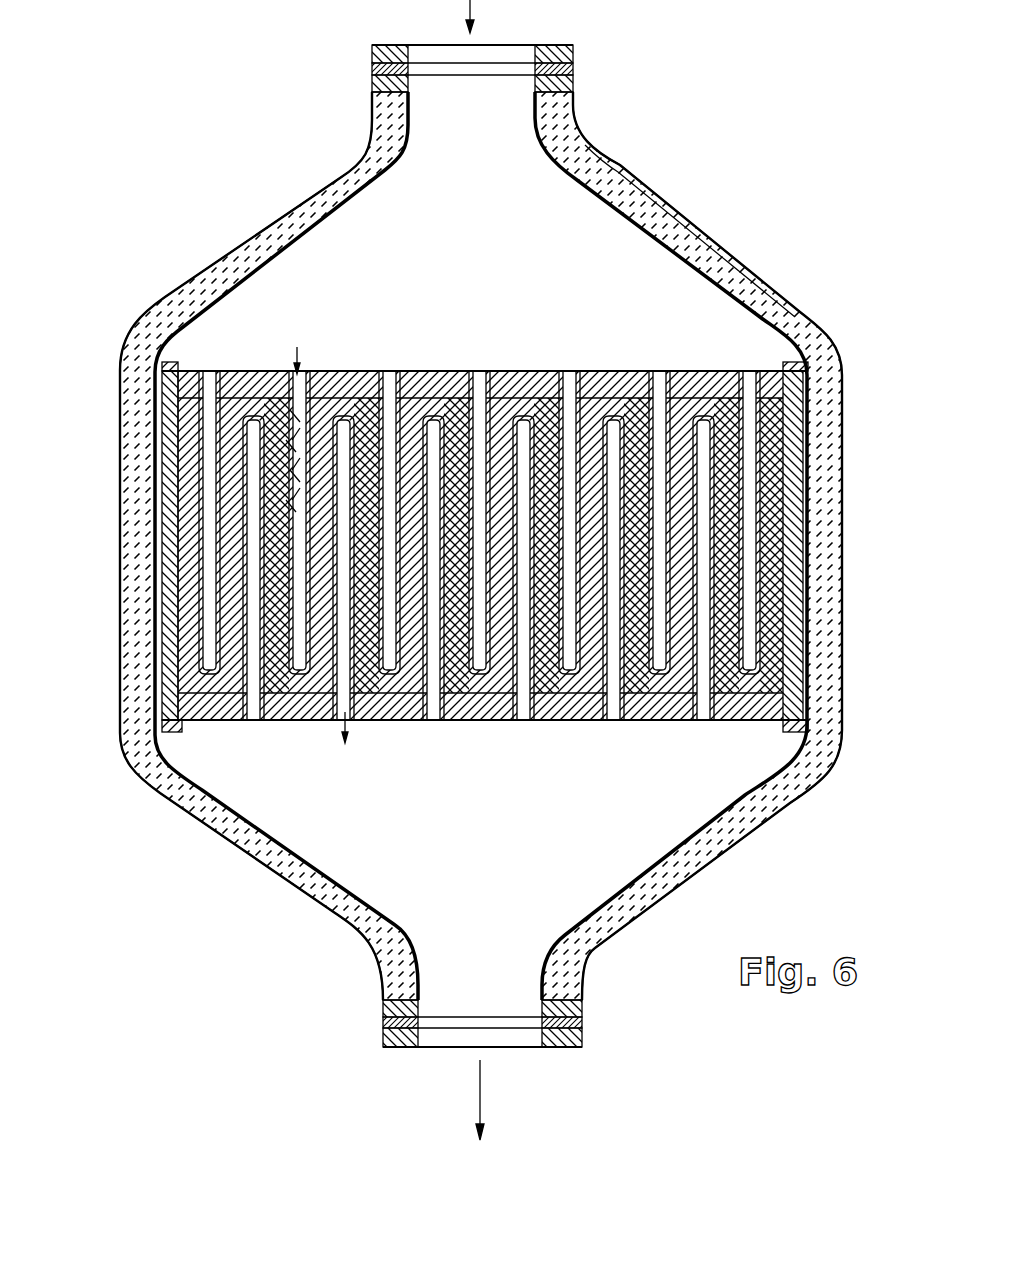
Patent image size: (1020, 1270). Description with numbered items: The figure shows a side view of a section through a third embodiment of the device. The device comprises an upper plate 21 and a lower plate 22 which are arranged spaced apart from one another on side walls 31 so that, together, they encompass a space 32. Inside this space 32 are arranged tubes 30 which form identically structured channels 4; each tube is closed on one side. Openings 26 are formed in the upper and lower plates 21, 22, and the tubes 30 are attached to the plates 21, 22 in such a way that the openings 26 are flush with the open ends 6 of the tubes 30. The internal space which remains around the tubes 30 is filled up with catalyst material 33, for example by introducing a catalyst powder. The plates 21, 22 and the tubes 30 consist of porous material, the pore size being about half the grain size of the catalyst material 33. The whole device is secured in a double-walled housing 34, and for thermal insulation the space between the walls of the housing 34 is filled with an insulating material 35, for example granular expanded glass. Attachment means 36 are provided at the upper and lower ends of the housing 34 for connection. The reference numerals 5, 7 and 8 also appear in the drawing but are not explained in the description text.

The channels 4 is at (253, 485).
The end plate 5 is at (783, 670).
The open ends 6 is at (207, 392).
The plate 7 is at (753, 537).
The plate 8 is at (253, 590).
The upper plate 21 is at (773, 383).
The lower plate 22 is at (768, 707).
The openings 26 is at (386, 372).
The tubes 30 is at (805, 433).
The side walls 31 is at (793, 503).
The space 32 is at (360, 370).
The catalyst material 33 is at (505, 393).
The double-walled housing 34 is at (677, 250).
The insulating material 35 is at (215, 820).
The attachment means 36 is at (372, 66).